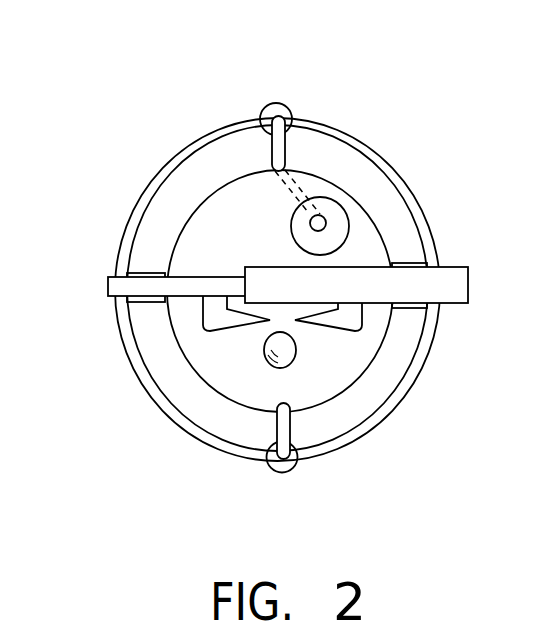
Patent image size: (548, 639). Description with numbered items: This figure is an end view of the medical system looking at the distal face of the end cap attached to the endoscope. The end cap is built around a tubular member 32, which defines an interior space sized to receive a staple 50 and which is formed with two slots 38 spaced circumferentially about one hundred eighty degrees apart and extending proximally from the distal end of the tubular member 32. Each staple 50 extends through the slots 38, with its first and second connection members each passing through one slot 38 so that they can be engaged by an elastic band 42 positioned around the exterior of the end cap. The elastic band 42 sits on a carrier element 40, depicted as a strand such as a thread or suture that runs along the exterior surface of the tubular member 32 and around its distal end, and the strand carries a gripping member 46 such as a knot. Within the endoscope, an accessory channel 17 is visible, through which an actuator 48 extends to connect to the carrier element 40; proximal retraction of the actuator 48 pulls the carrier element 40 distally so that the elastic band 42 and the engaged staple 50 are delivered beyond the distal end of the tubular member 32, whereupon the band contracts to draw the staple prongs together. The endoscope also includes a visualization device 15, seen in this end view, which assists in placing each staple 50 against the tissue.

The visualization device 15 is at (297, 360).
The accessory channel 17 is at (320, 195).
The tubular member 32 is at (200, 160).
The slot 38 is at (145, 272).
The carrier element 40 is at (290, 133).
The elastic band 42 is at (135, 355).
The gripping member 46 is at (278, 101).
The actuator 48 is at (335, 219).
The staple 50 is at (257, 267).